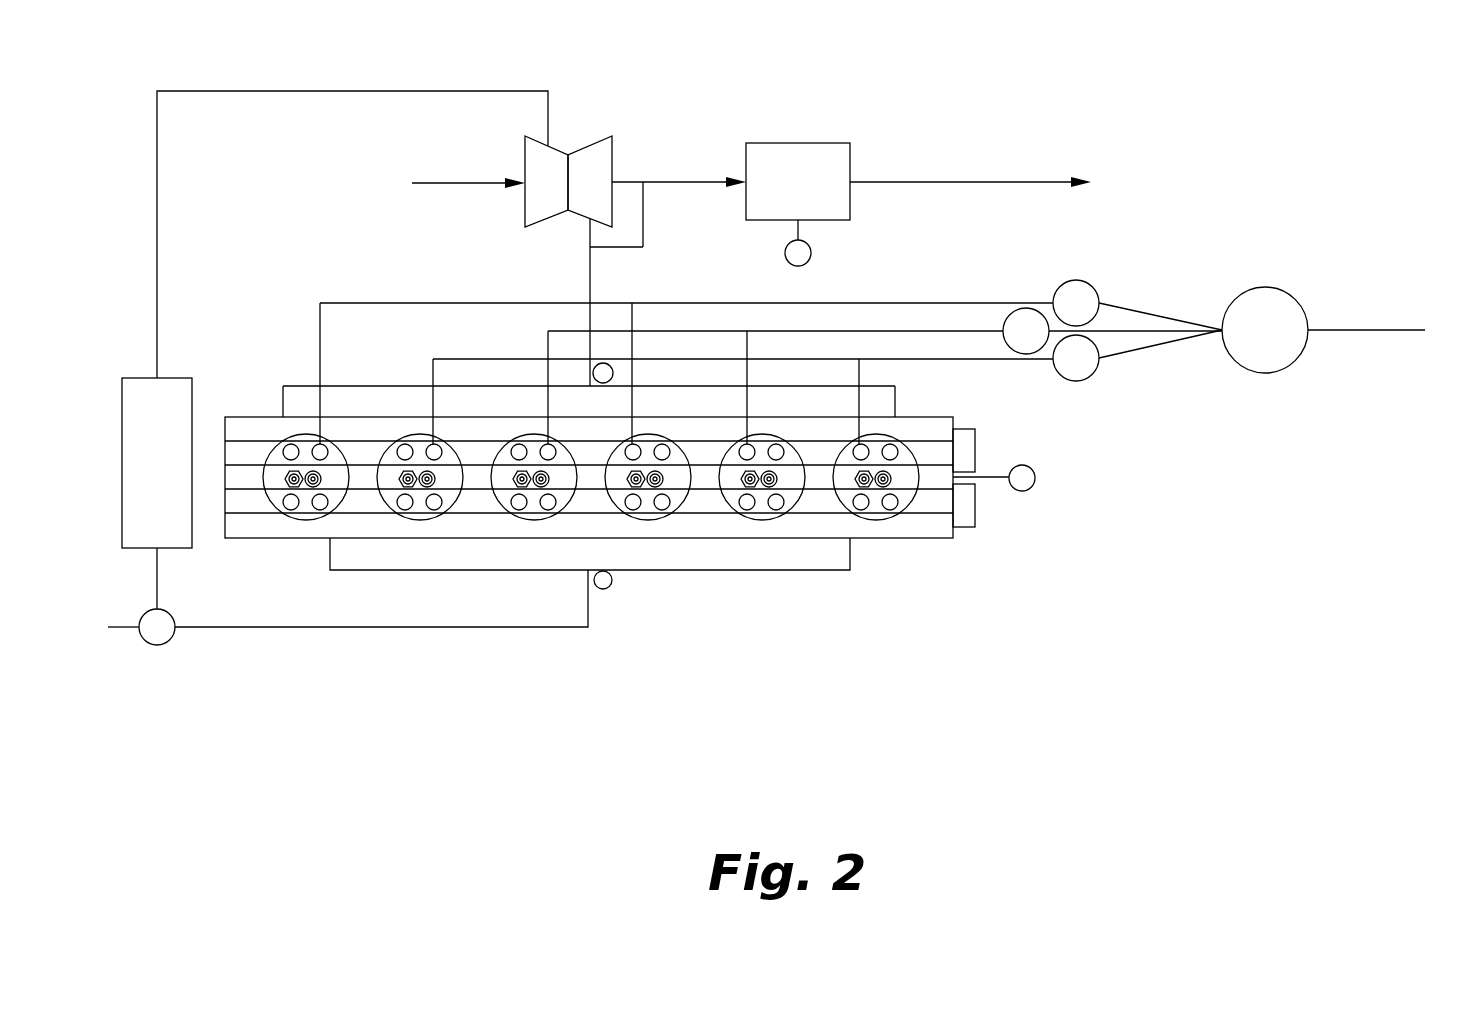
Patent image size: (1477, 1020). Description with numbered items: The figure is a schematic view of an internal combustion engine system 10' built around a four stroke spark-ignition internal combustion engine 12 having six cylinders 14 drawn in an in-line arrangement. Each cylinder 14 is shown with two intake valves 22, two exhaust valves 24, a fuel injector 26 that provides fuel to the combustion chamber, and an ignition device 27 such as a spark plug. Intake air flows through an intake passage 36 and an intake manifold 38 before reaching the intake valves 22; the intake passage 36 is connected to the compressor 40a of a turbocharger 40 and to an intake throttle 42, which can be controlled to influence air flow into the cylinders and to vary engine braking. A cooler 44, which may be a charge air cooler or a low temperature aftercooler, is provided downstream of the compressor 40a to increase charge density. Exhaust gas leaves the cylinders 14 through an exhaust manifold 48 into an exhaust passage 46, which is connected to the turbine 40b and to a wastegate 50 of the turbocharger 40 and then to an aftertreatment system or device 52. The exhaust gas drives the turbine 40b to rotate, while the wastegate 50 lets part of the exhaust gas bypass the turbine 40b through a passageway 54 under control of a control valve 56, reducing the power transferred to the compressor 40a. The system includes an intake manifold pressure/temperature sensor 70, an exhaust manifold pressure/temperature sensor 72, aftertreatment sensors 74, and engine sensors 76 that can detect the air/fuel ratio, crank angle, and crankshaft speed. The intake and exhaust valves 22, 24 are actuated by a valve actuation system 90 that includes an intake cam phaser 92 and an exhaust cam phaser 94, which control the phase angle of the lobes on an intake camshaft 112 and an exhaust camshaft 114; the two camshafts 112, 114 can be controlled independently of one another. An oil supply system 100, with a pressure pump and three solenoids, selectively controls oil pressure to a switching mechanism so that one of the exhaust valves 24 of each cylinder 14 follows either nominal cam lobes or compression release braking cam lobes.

The internal combustion engine system 10' is at (336, 758).
The internal combustion engine 12 is at (573, 490).
The cylinders 14 is at (288, 432).
The intake valve 22 is at (888, 512).
The exhaust valve 24 is at (872, 452).
The fuel injector 26 is at (891, 478).
The ignition device 27 is at (855, 477).
The intake passage 36 is at (458, 181).
The intake manifold 38 is at (465, 557).
The turbocharger 40 is at (565, 142).
The compressor 40a is at (530, 210).
The turbine 40b is at (605, 151).
The intake throttle 42 is at (151, 608).
The cooler 44 is at (121, 412).
The exhaust passage 46 is at (590, 276).
The exhaust manifold 48 is at (344, 402).
The wastegate 50 is at (664, 203).
The aftertreatment system or device 52 is at (855, 192).
The passageway 54 is at (616, 250).
The control valve 56 is at (645, 233).
The intake manifold pressure/temperature sensor 70 is at (605, 590).
The exhaust manifold pressure/temperature sensor 72 is at (597, 367).
The aftertreatment sensor 74 is at (812, 258).
The engine sensors 76 is at (1035, 478).
The valve actuation system 90 is at (1152, 471).
The intake cam phaser 92 is at (967, 528).
The exhaust cam phaser 94 is at (965, 428).
The oil supply system 100 is at (1240, 264).
The intake camshaft 112 is at (347, 507).
The exhaust camshaft 114 is at (237, 450).